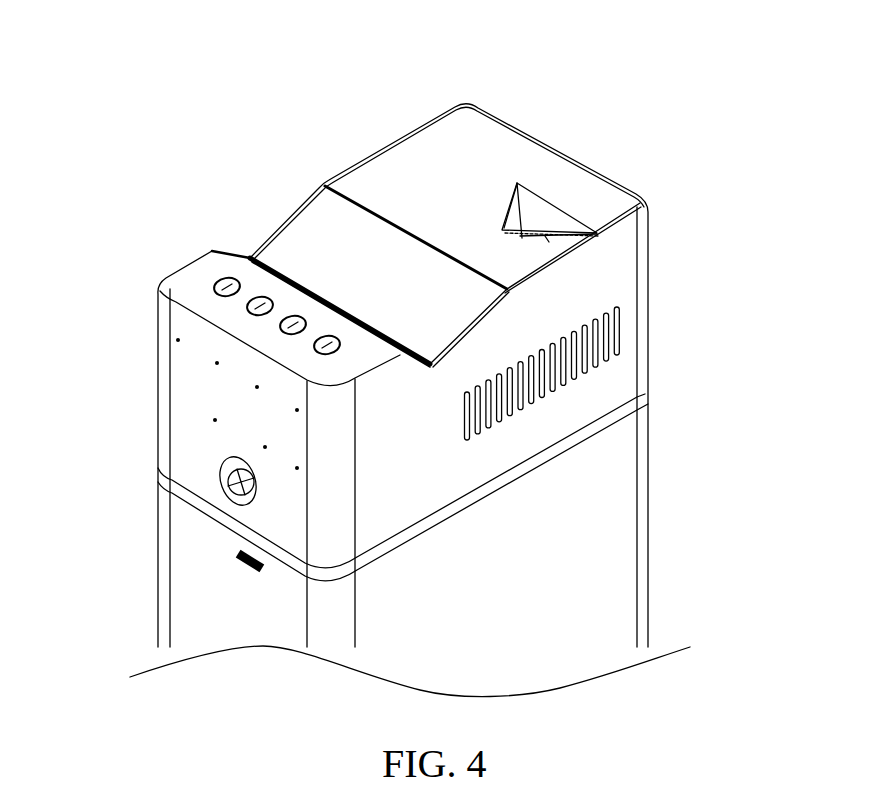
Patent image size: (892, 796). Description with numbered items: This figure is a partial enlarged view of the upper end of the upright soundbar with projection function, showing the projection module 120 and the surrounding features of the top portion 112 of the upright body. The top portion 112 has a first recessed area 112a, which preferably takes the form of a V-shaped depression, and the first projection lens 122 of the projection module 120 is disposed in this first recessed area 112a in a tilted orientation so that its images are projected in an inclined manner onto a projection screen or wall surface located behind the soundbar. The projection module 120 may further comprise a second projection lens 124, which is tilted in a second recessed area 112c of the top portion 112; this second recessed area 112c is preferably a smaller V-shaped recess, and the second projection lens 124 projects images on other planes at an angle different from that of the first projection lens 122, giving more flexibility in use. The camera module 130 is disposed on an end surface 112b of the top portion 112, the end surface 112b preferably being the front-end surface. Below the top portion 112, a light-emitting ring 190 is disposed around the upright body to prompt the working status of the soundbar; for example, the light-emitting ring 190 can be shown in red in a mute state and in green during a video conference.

The top portion 112 is at (416, 331).
The first recessed area 112a is at (283, 260).
The end surface 112b is at (324, 449).
The second recessed area 112c is at (528, 197).
The projection module 120 is at (550, 266).
The first projection lens 122 is at (357, 322).
The second projection lens 124 is at (523, 237).
The camera module 130 is at (226, 467).
The light-emitting ring 190 is at (595, 423).